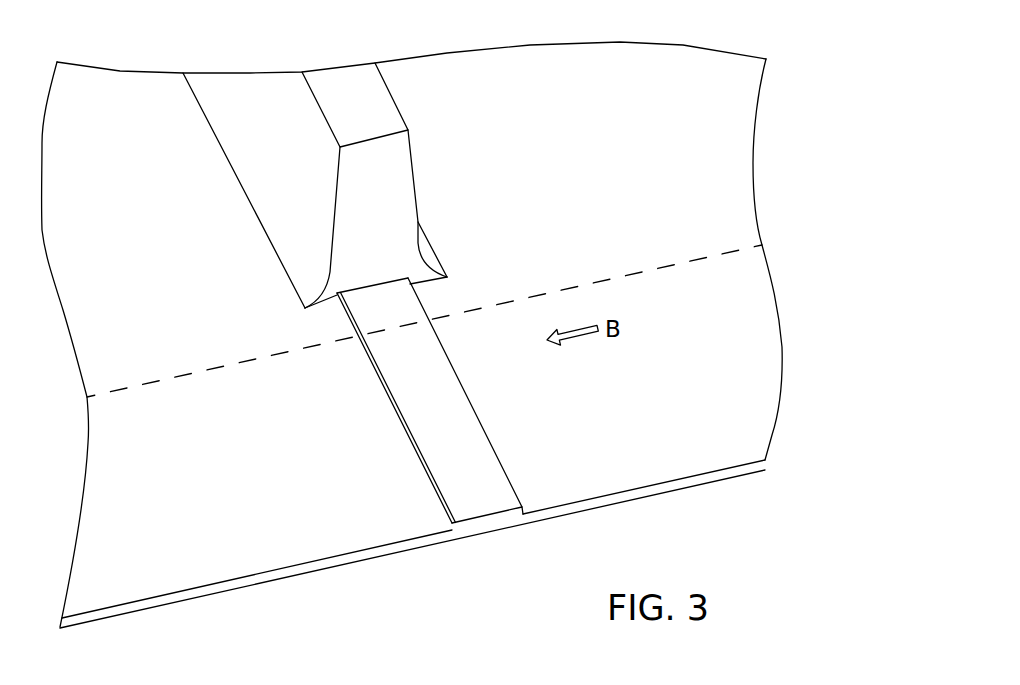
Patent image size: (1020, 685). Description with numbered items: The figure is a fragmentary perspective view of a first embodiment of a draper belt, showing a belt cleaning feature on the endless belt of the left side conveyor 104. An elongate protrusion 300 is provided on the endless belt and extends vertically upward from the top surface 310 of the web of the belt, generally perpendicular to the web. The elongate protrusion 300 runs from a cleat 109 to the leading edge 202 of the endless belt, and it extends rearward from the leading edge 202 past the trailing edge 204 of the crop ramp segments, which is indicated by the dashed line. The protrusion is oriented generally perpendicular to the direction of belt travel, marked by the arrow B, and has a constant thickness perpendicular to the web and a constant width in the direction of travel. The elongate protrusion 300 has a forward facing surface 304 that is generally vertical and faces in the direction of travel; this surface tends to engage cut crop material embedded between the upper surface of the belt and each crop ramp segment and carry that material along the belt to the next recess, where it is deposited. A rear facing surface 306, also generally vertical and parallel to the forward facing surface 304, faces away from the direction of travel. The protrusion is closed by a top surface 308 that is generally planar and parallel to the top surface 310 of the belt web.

The left side conveyor 104 is at (690, 317).
The cleat 109 is at (387, 185).
The leading edge 202 is at (474, 524).
The trailing edge 204 is at (627, 273).
The elongate protrusion 300 is at (478, 454).
The forward facing surface 304 is at (430, 485).
The rear facing surface 306 is at (493, 443).
The top surface 308 is at (475, 495).
The top surface of the web 310 is at (287, 518).